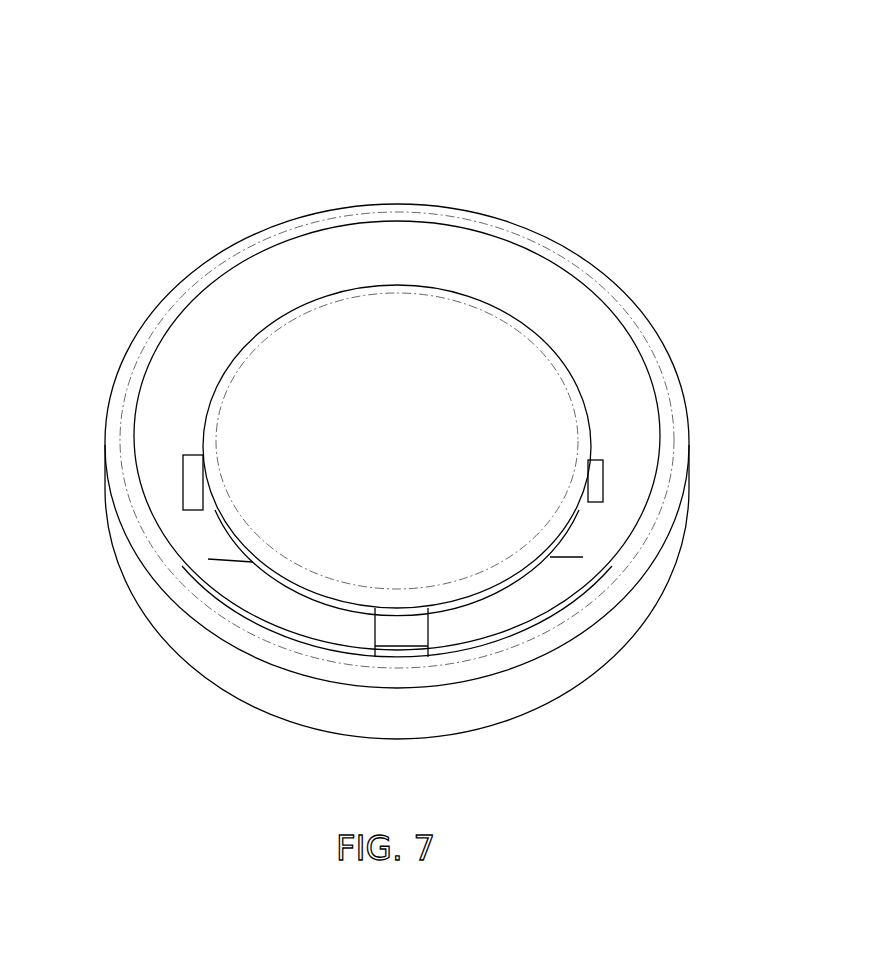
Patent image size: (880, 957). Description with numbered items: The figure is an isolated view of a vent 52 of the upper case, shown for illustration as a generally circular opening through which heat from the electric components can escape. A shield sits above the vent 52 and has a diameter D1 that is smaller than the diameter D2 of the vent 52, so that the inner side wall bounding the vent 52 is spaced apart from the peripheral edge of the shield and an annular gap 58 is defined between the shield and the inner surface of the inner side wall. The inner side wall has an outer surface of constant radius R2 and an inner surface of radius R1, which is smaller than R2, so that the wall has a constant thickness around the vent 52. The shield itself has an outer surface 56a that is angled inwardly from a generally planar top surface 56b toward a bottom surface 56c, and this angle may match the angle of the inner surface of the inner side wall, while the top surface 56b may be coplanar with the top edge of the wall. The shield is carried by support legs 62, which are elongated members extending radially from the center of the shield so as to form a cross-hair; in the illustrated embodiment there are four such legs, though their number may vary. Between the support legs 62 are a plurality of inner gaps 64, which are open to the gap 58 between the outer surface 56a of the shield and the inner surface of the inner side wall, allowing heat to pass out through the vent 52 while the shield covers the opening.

The vent 52 is at (637, 651).
The outer surface of the shield 56a is at (273, 568).
The top surface of the shield 56b is at (419, 564).
The bottom surface of the shield 56c is at (330, 622).
The gap 58 is at (235, 570).
The support legs 62 is at (188, 520).
The inner gaps 64 is at (537, 583).
The diameter of the shield D1 is at (590, 480).
The diameter of the vent D2 is at (660, 440).
The radius of the inner surface of the inner side wall R1 is at (686, 435).
The radius of the outer surface of the inner side wall R2 is at (583, 478).